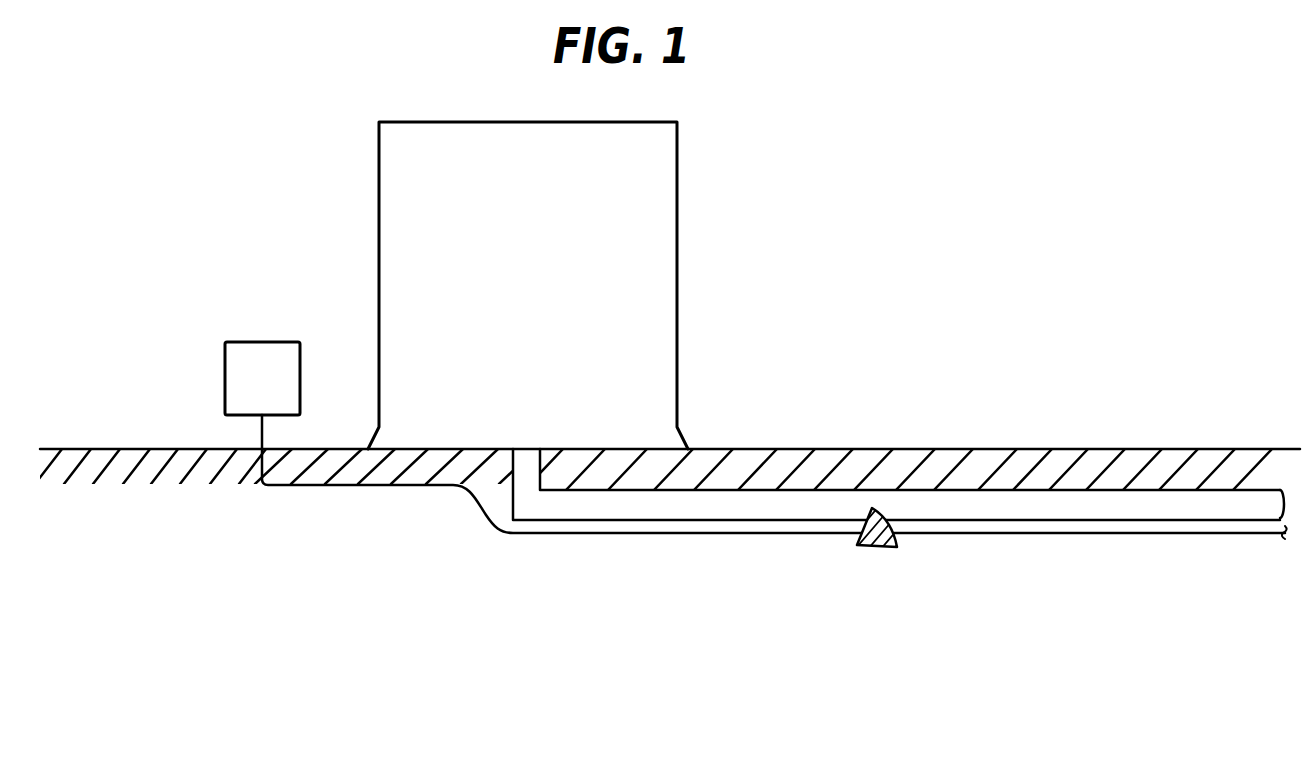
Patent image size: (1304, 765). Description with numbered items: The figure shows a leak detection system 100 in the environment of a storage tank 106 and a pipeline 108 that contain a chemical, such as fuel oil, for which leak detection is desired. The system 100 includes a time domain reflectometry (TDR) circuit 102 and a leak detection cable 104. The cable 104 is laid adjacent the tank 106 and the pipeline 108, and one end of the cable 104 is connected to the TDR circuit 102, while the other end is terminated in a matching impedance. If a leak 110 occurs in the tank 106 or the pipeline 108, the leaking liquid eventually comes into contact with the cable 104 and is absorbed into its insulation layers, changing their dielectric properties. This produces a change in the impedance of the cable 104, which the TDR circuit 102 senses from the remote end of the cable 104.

The leak detection system 100 is at (358, 522).
The time domain reflectometry (TDR) circuit 102 is at (253, 342).
The leak detection cable 104 is at (613, 534).
The storage tank 106 is at (677, 217).
The pipeline 108 is at (820, 500).
The leak 110 is at (870, 560).